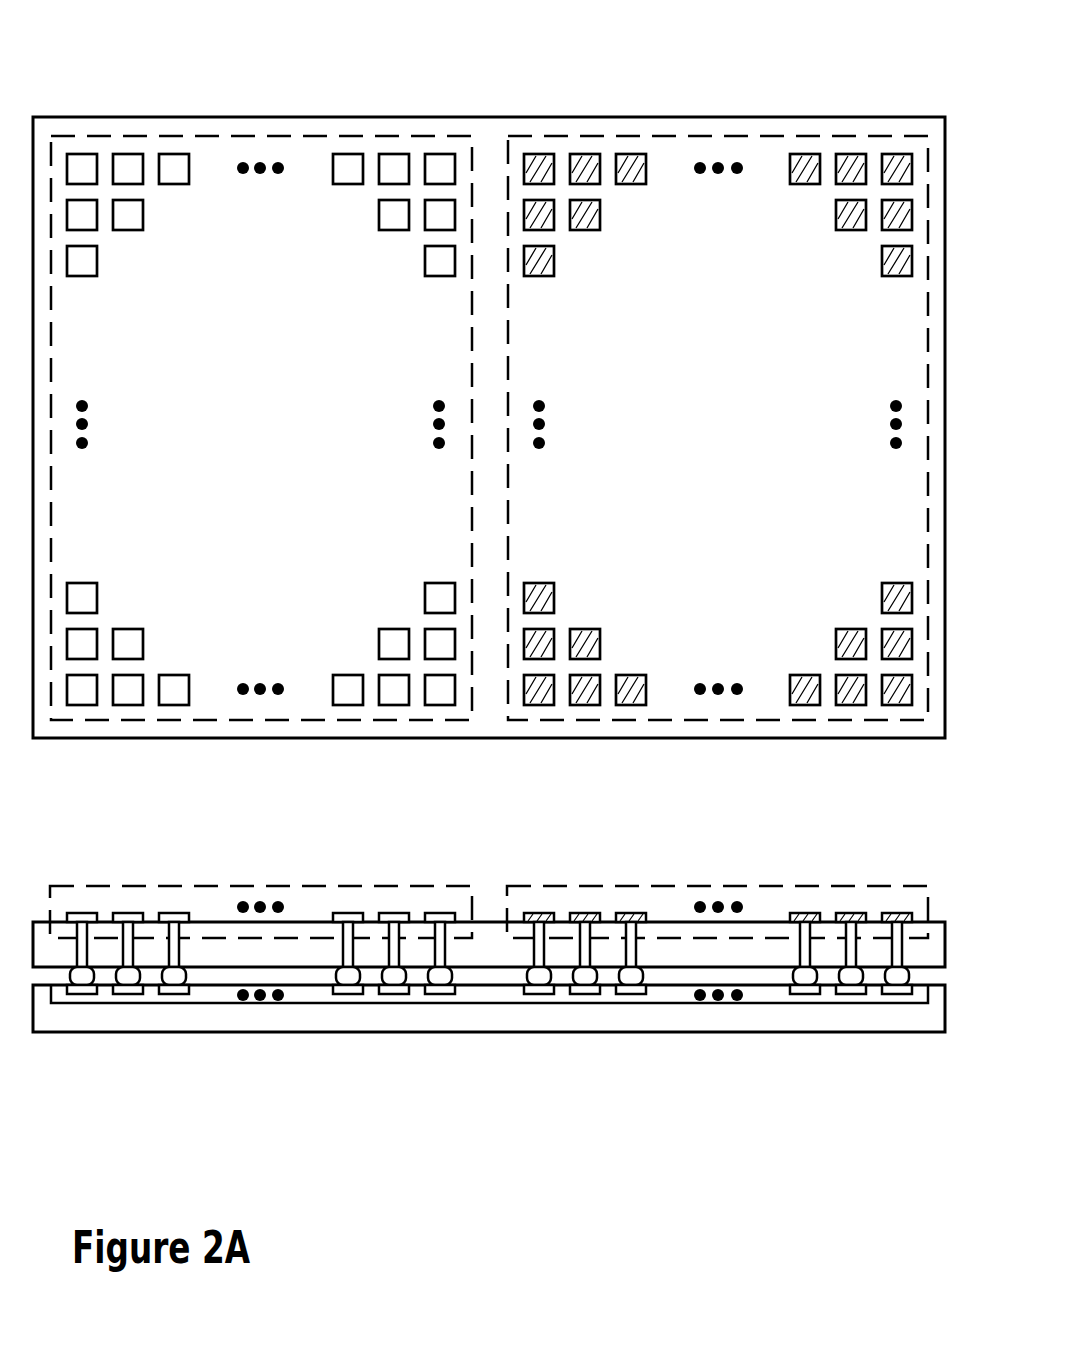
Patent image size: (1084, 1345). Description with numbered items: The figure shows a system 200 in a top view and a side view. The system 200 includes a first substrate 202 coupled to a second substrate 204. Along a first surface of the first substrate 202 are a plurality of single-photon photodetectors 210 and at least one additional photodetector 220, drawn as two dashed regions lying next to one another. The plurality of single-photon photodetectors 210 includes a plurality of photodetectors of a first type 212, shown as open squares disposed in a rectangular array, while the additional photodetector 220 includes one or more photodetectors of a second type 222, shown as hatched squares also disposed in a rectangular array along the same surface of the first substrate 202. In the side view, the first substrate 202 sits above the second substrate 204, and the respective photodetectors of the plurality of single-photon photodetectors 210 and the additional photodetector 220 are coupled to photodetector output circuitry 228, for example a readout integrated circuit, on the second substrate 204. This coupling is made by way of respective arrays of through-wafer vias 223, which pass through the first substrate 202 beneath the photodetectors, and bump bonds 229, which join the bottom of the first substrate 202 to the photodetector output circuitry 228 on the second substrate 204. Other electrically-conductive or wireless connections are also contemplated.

The system 200 is at (856, 80).
The first substrate 202 is at (277, 117).
The second substrate 204 is at (380, 1032).
The plurality of single-photon photodetectors 210 is at (445, 136).
The photodetectors of a first type 212 is at (178, 154).
The additional photodetector 220 is at (717, 136).
The photodetectors of a second type 222 is at (802, 155).
The through-wafer vias 223 is at (810, 957).
The photodetector output circuitry 228 is at (325, 1003).
The bump bonds 229 is at (645, 972).